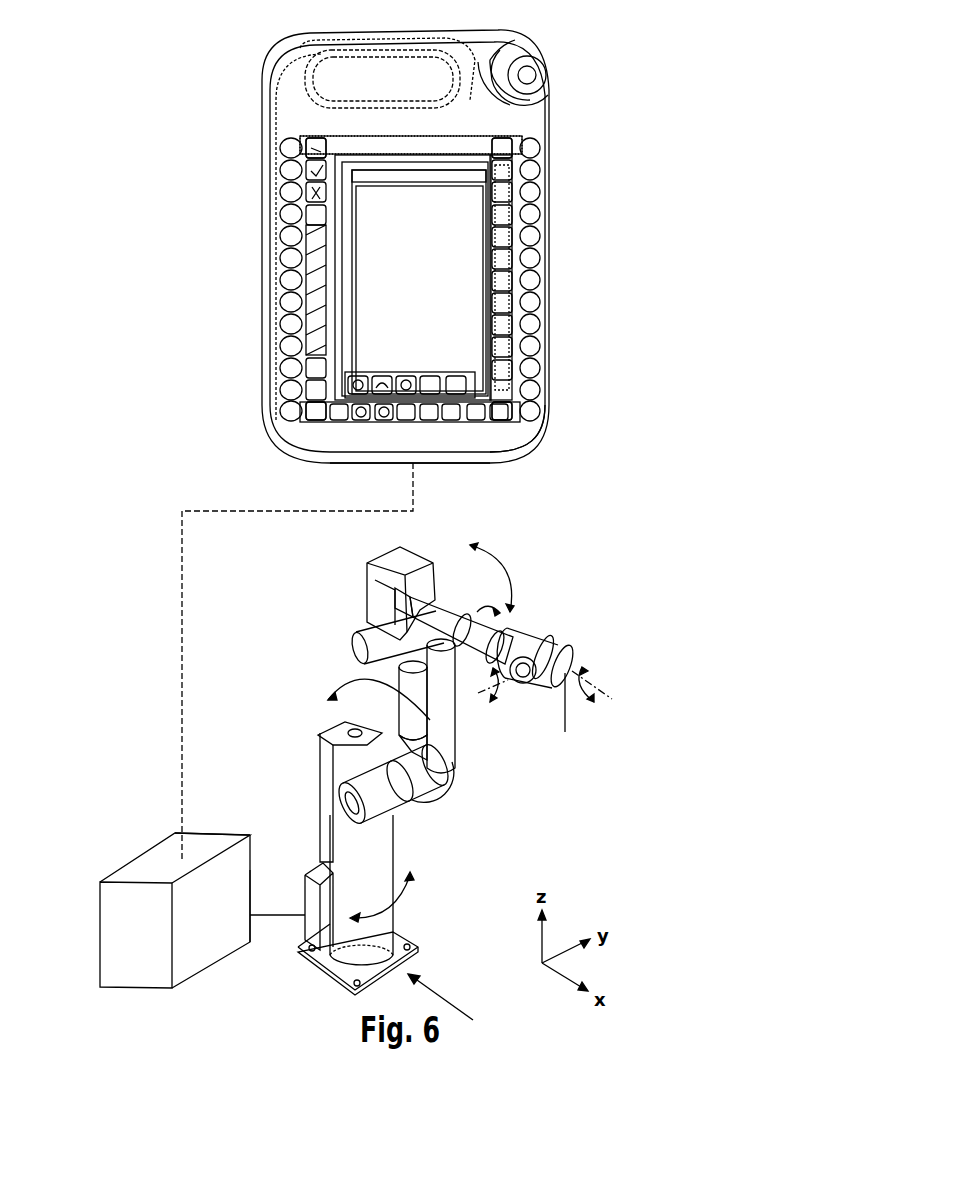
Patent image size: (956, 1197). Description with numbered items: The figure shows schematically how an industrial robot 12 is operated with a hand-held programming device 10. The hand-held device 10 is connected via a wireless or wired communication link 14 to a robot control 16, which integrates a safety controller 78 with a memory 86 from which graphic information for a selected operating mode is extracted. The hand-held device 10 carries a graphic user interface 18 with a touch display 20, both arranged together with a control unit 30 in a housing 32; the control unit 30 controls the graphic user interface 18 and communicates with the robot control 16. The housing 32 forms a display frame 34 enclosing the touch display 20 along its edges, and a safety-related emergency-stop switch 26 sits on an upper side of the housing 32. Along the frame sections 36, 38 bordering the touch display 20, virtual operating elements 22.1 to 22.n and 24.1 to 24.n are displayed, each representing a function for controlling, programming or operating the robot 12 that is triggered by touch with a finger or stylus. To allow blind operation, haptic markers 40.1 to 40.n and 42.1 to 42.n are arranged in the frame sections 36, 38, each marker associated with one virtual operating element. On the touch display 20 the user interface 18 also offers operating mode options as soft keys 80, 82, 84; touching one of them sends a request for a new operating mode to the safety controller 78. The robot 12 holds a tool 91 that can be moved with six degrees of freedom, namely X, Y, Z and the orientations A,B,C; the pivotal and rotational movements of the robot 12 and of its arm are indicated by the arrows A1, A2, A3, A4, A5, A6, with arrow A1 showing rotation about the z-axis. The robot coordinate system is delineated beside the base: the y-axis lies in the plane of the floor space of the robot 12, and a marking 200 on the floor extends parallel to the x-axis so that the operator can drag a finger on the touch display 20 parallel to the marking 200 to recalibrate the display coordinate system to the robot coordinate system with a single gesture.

The hand-held programming device 10 is at (312, 25).
The industrial robot 12 is at (288, 596).
The communication link 14 is at (180, 612).
The robot control 16 is at (140, 866).
The graphic user interface 18 is at (424, 226).
The touch display 20 is at (424, 302).
The virtual operating element 22.1 is at (535, 143).
The virtual operating element 22.n is at (538, 408).
The virtual operating element 24.1 is at (288, 145).
The virtual operating element 24.n is at (288, 408).
The emergency-stop switch 26 is at (548, 74).
The control unit 30 is at (432, 470).
The housing 32 is at (290, 85).
The display frame 34 is at (543, 440).
The frame section 36 is at (490, 282).
The frame section 38 is at (332, 280).
The haptic marker 40.1 is at (515, 150).
The haptic marker 40.n is at (515, 413).
The haptic marker 42.1 is at (300, 150).
The haptic marker 42.n is at (302, 413).
The safety controller 78 is at (210, 842).
The soft key 80 is at (352, 374).
The soft key 82 is at (378, 374).
The soft key 84 is at (405, 374).
The memory 86 is at (250, 870).
The tool 91 is at (565, 715).
The marking 200 is at (442, 995).
The arrow A1 is at (397, 897).
The arrow A2 is at (367, 693).
The arrow A3 is at (493, 575).
The arrow A4 is at (485, 601).
The arrow A5 is at (493, 697).
The arrow A6 is at (599, 673).
The orientations A,B,C is at (578, 720).